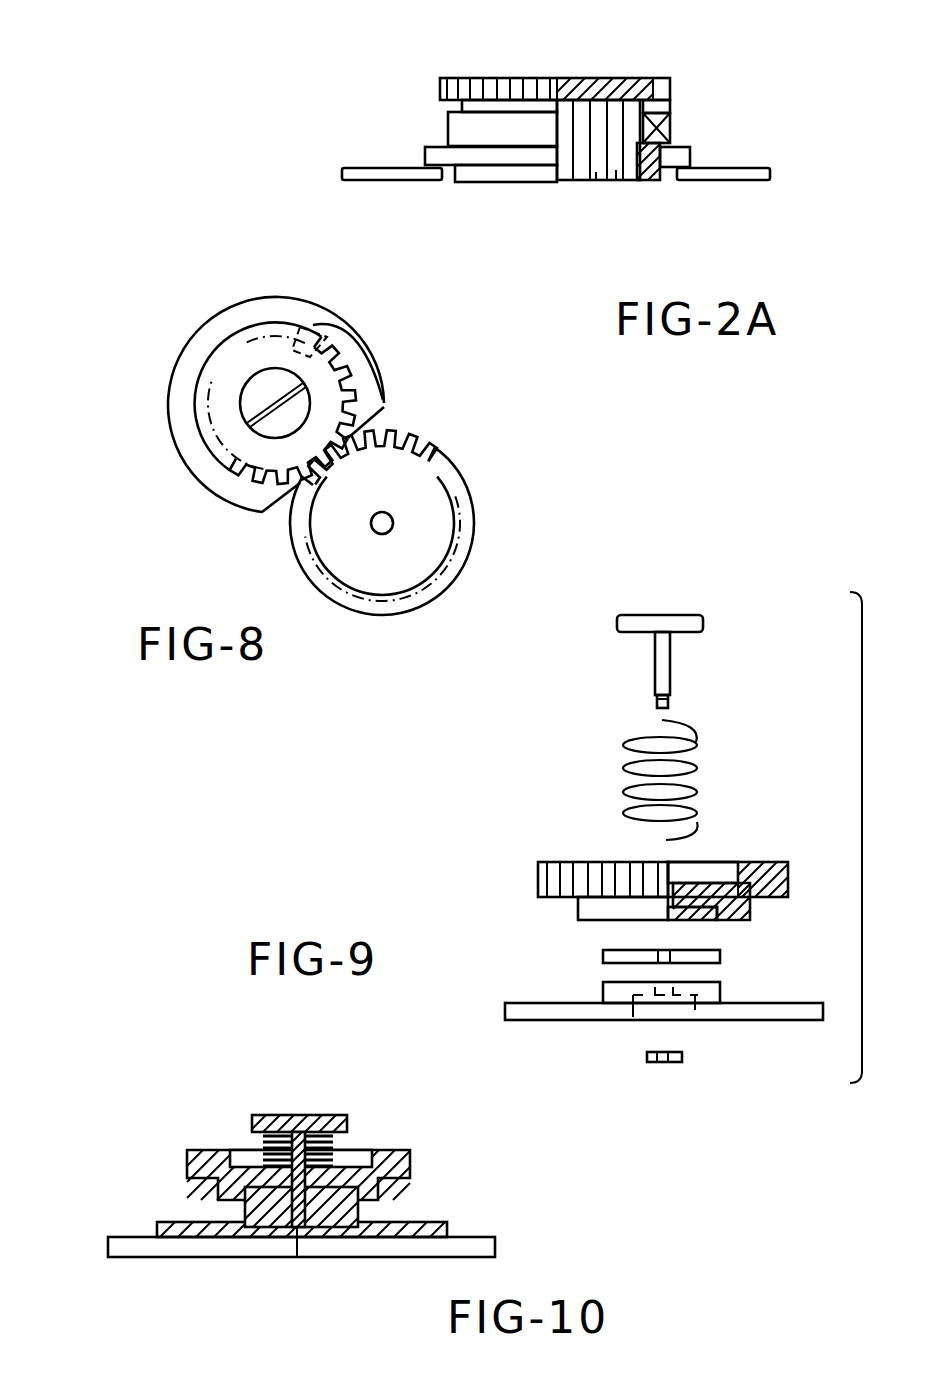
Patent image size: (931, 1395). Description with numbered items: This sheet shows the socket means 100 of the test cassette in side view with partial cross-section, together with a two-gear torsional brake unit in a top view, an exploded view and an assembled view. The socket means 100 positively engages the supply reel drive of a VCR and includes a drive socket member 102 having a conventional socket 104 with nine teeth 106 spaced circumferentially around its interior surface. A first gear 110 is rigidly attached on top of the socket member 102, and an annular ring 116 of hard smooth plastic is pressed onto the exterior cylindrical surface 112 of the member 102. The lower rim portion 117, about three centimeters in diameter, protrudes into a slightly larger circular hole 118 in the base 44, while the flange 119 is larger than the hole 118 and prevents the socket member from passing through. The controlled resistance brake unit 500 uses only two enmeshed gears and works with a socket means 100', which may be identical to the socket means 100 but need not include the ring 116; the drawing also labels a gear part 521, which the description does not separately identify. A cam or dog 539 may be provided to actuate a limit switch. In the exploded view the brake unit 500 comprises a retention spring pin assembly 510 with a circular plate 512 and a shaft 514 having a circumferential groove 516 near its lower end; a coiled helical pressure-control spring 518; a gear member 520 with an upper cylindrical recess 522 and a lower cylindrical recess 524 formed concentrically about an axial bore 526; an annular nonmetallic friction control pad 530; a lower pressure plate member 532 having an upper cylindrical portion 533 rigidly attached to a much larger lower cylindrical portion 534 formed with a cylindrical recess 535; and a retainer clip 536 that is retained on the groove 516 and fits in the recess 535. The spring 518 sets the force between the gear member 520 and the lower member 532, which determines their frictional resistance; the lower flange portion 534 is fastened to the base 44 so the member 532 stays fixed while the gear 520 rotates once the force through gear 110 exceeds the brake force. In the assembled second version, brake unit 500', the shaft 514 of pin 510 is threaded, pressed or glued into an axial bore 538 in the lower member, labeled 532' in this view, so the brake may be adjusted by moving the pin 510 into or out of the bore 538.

In FIG. 2A, the socket means 100 is at (536, 140).
In FIG. 2A, the first gear 110 is at (440, 88).
In FIG. 8, the first gear 110 is at (418, 450).
In FIG. 2A, the annular ring 116 is at (448, 122).
In FIG. 2A, the drive socket member 102 is at (422, 157).
In FIG. 2A, the base 44 is at (380, 183).
In FIG. 2A, the lower rim portion 117 is at (485, 183).
In FIG. 2A, the socket 104 is at (582, 186).
In FIG. 2A, the teeth 106 is at (596, 172).
In FIG. 2A, the exterior cylindrical surface 112 is at (652, 130).
In FIG. 2A, the flange 119 is at (690, 158).
In FIG. 2A, the circular hole 118 is at (670, 182).
In FIG. 8, the lower cylindrical portion 534 is at (231, 312).
In FIG. 9, the lower cylindrical portion 534 is at (777, 1021).
In FIG. 8, the lower pressure plate member 532 is at (248, 404).
In FIG. 9, the lower pressure plate member 532 is at (630, 1016).
In FIG. 8, the cam or dog 539 is at (333, 322).
In FIG. 8, the gear body 521 is at (357, 378).
In FIG. 9, the gear body 521 is at (558, 900).
In FIG. 8, the controlled resistance brake unit 500 is at (286, 390).
In FIG. 9, the controlled resistance brake unit 500 is at (630, 858).
In FIG. 8, the socket means 100' is at (352, 522).
In FIG. 9, the circular plate 512 is at (704, 622).
In FIG. 9, the shaft 514 is at (670, 677).
In FIG. 9, the circumferential groove 516 is at (669, 699).
In FIG. 9, the retention spring pin assembly 510 is at (578, 680).
In FIG. 10, the retention spring pin assembly 510 is at (265, 1113).
In FIG. 9, the pressure-control spring 518 is at (697, 758).
In FIG. 10, the pressure-control spring 518 is at (262, 1140).
In FIG. 9, the gear member 520 is at (552, 858).
In FIG. 10, the gear member 520 is at (178, 1165).
In FIG. 9, the axial bore 526 is at (670, 860).
In FIG. 9, the upper cylindrical recess 522 is at (722, 860).
In FIG. 9, the lower cylindrical recess 524 is at (708, 919).
In FIG. 9, the friction control pad 530 is at (605, 955).
In FIG. 10, the friction control pad 530 is at (330, 1193).
In FIG. 9, the upper cylindrical portion 533 is at (705, 982).
In FIG. 9, the cylindrical recess 535 is at (683, 1010).
In FIG. 9, the retainer clip 536 is at (647, 1057).
In FIG. 10, the brake unit 500' is at (282, 1180).
In FIG. 10, the housing 532' is at (291, 1222).
In FIG. 10, the axial bore 538 is at (298, 1248).